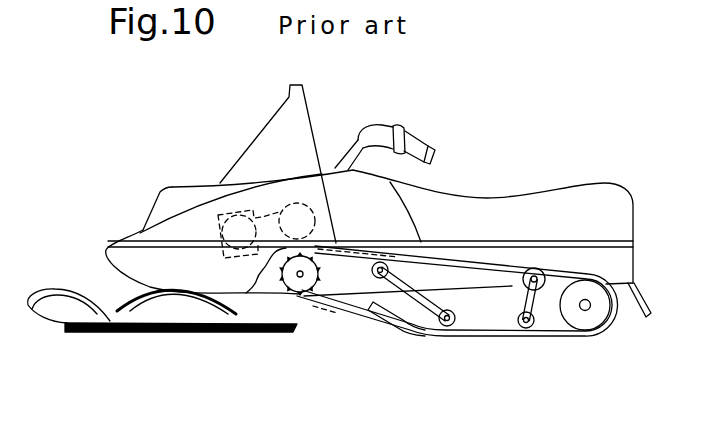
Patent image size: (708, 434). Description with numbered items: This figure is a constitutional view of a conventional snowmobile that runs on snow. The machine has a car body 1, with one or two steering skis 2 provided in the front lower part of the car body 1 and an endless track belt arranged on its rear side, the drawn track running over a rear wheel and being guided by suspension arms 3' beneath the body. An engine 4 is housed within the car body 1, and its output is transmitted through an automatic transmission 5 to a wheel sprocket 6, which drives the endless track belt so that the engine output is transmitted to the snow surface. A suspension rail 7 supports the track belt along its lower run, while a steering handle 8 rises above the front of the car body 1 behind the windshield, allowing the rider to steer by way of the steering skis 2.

The car body 1 is at (524, 212).
The steering ski 2 is at (208, 332).
The suspension arm 3' is at (454, 333).
The engine 4 is at (232, 213).
The automatic transmission 5 is at (294, 207).
The wheel sprocket 6 is at (307, 297).
The suspension rail 7 is at (497, 333).
The steering handle 8 is at (387, 131).